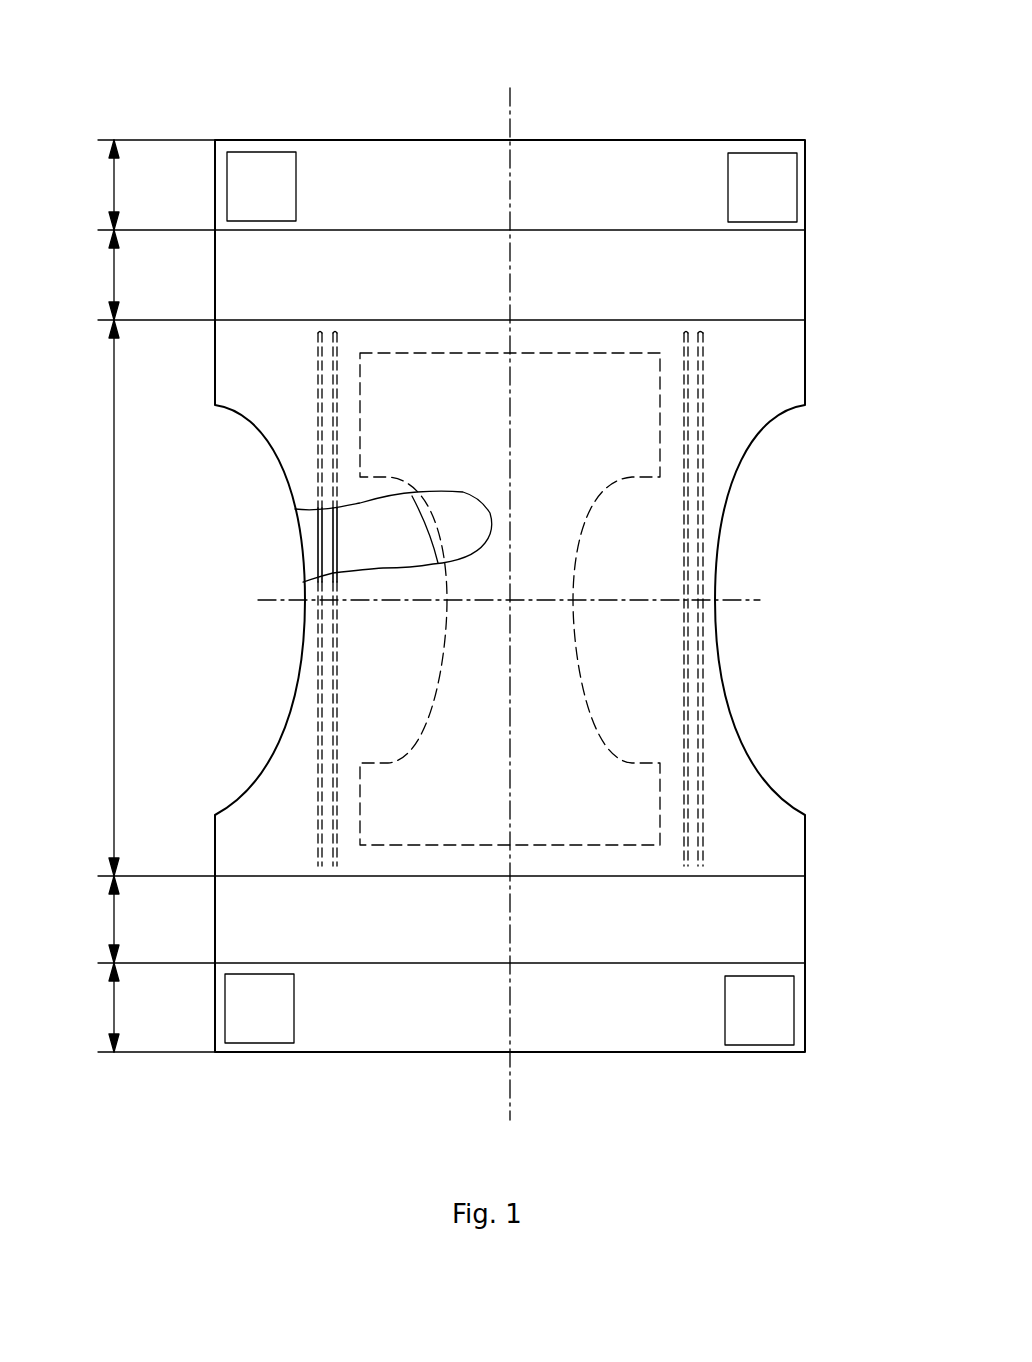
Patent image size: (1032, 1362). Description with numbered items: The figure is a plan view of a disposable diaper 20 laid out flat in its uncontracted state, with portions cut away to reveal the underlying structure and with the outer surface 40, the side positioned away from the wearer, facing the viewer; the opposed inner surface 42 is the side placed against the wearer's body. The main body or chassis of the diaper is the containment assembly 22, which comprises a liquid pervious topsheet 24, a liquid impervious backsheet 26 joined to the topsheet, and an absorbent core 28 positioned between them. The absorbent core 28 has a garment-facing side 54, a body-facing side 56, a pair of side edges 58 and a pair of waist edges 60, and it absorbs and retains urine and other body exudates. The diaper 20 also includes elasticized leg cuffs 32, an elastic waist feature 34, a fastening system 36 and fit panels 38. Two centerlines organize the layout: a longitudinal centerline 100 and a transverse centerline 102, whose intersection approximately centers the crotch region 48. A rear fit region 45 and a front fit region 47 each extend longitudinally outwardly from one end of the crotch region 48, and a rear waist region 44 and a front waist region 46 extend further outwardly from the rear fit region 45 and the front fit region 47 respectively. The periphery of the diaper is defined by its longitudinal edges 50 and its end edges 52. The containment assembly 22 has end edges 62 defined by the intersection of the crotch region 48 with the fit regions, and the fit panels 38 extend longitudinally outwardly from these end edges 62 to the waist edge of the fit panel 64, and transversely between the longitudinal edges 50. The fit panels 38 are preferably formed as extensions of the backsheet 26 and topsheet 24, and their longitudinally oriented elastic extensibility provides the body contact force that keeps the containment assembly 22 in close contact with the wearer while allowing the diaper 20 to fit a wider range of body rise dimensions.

The diaper 20 is at (650, 80).
The containment assembly 22 is at (540, 484).
The topsheet 24 is at (352, 557).
The backsheet 26 is at (778, 375).
The absorbent core 28 is at (445, 542).
The elasticized leg cuffs 32 is at (320, 700).
The elastic waist feature 34 is at (364, 174).
The fastening system 36 is at (250, 182).
The fit panels 38 is at (263, 268).
The outer surface 40 is at (735, 449).
The inner surface 42 is at (402, 1042).
The rear waist region 44 is at (114, 185).
The rear fit region 45 is at (114, 275).
The front waist region 46 is at (114, 1007).
The front fit region 47 is at (114, 915).
The crotch region 48 is at (114, 598).
The longitudinal edges 50 is at (293, 724).
The end edges 52 is at (666, 140).
The garment-facing side 54 is at (476, 527).
The body-facing side 56 is at (488, 538).
The side edges 58 is at (445, 658).
The waist edges 60 is at (573, 352).
The end edges of the containment assembly 62 is at (452, 320).
The waist edge of the fit panel 64 is at (760, 233).
The longitudinal centerline 100 is at (512, 102).
The transverse centerline 102 is at (272, 599).